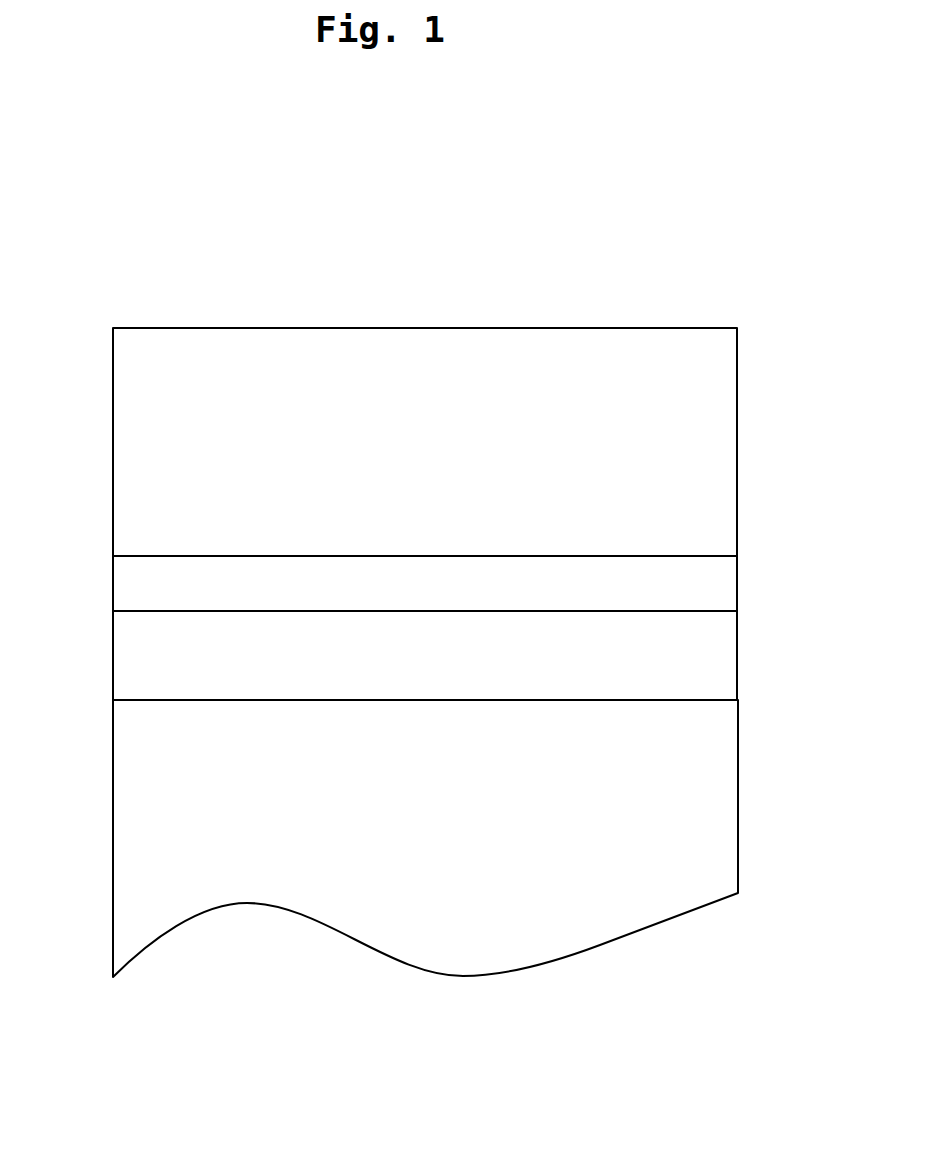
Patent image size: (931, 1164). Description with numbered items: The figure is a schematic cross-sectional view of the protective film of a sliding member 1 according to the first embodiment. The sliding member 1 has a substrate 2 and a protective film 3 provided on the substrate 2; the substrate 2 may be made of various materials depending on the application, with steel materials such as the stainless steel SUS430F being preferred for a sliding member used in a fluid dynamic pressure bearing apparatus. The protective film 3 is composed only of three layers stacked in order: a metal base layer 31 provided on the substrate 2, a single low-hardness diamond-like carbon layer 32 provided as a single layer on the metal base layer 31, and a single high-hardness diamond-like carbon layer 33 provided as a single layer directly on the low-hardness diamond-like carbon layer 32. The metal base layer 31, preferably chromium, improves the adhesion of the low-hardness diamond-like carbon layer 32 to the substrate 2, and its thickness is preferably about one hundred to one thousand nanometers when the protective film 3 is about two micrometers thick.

The sliding member 1 is at (525, 290).
The substrate 2 is at (717, 804).
The protective film 3 is at (103, 329).
The metal base layer 31 is at (715, 660).
The single low-hardness diamond-like carbon layer 32 is at (712, 583).
The single high-hardness diamond-like carbon layer 33 is at (712, 455).